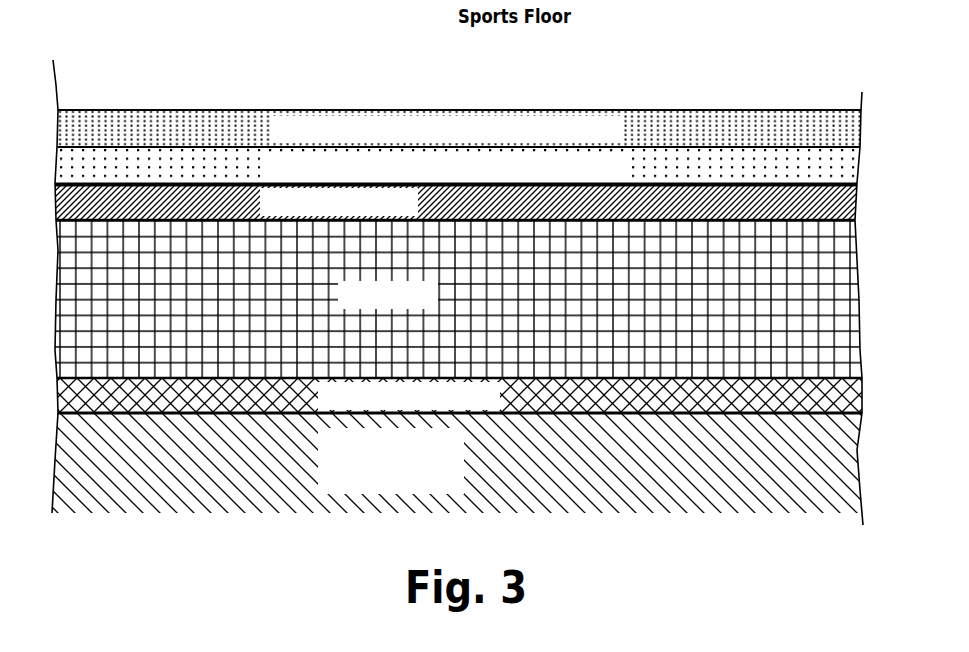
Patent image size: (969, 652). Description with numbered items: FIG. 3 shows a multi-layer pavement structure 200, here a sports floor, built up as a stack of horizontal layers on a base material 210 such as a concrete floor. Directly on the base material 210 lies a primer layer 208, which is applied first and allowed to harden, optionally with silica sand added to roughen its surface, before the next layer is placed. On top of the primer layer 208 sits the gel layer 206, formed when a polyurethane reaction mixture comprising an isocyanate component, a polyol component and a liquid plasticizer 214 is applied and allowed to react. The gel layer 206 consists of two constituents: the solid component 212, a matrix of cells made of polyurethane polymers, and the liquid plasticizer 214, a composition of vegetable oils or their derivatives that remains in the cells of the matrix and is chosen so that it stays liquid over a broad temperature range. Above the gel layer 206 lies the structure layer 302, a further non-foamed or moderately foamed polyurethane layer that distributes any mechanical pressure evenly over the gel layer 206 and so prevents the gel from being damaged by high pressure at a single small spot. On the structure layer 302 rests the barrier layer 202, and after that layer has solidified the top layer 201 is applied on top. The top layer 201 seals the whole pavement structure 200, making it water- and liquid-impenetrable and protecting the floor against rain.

The pavement structure 200 is at (653, 77).
The top layer 201 is at (130, 140).
The barrier layer 202 is at (130, 176).
The structure layer 302 is at (130, 212).
The gel layer 206 is at (130, 306).
The primer layer 208 is at (130, 408).
The base material 210 is at (130, 454).
The solid component 212 is at (222, 247).
The liquid plasticizer 214 is at (188, 247).